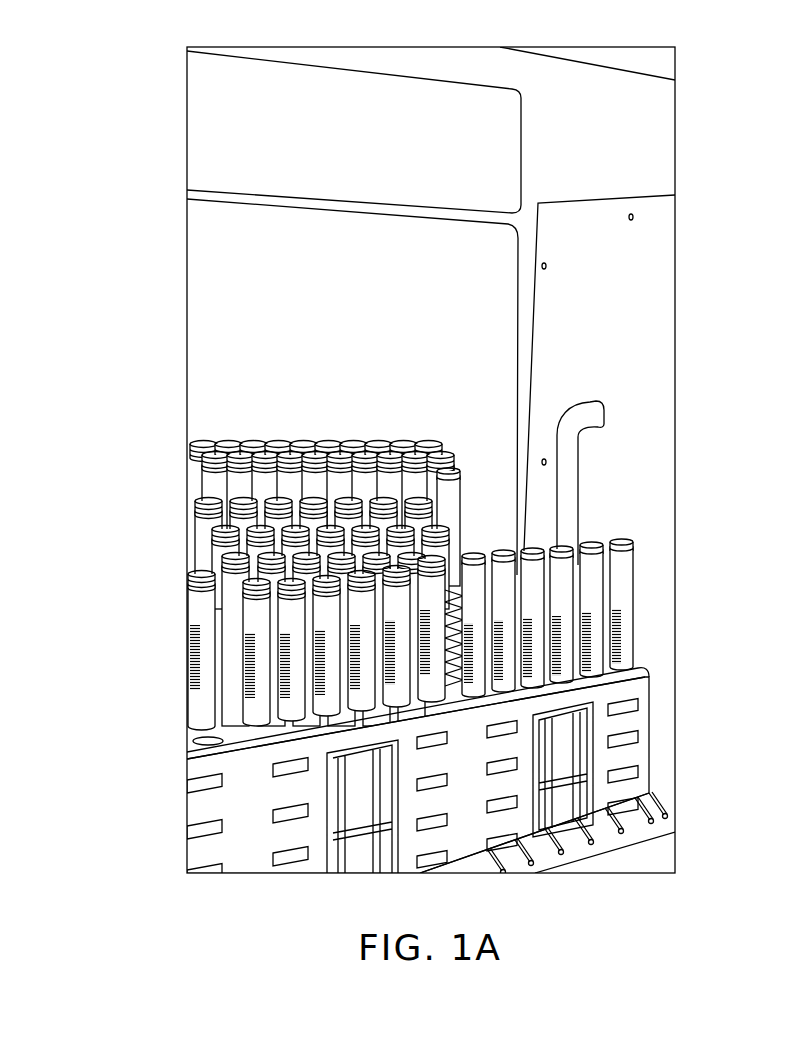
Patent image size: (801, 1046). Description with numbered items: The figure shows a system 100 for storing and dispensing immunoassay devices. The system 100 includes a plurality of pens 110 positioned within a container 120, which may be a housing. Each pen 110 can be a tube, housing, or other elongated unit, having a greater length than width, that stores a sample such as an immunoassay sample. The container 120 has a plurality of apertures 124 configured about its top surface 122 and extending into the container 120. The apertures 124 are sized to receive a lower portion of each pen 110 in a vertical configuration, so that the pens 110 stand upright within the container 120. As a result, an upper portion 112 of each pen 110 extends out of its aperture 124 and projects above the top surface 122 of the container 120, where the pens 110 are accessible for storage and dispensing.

The system 100 is at (703, 251).
The pen 110 is at (621, 536).
The upper portion 112 is at (633, 597).
The container 120 is at (649, 760).
The top surface 122 is at (647, 677).
The aperture 124 is at (210, 737).